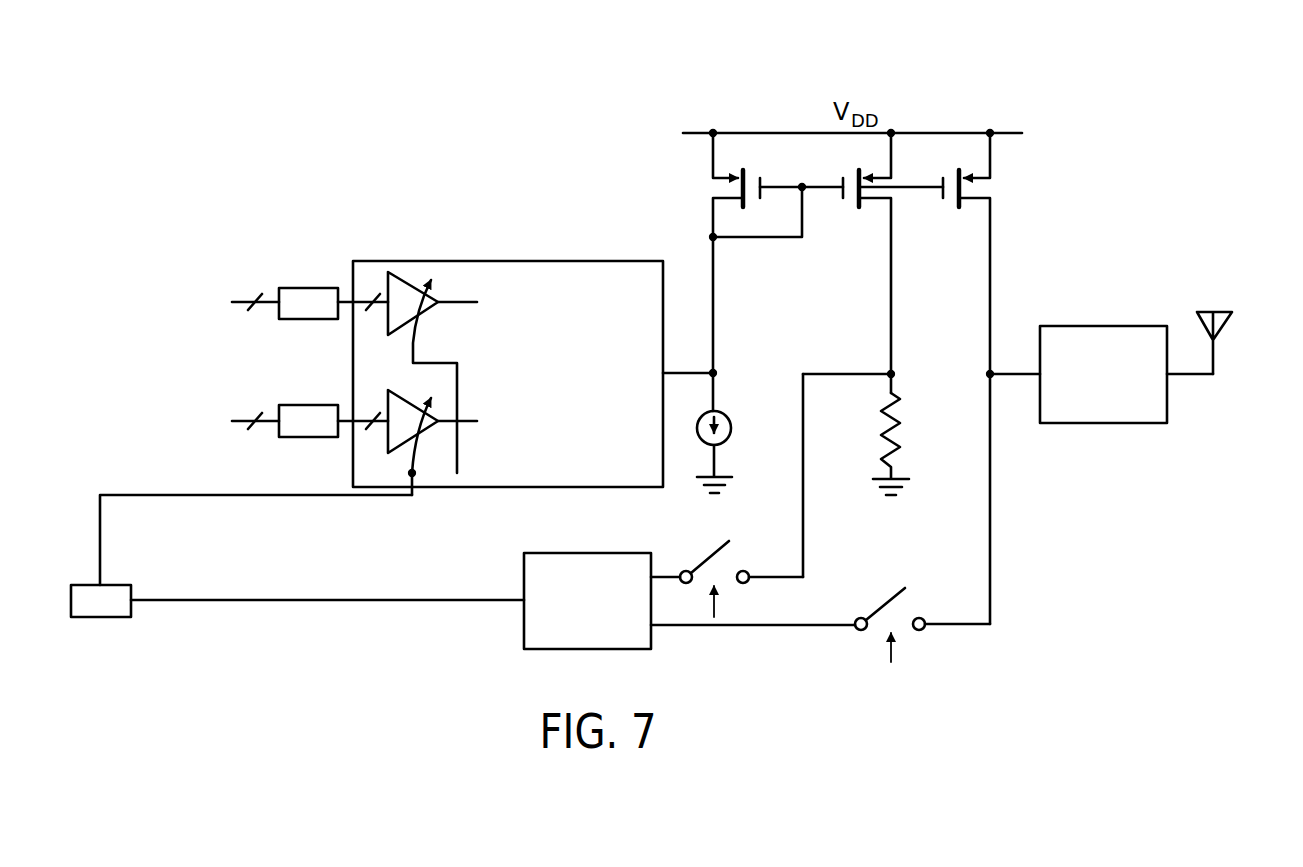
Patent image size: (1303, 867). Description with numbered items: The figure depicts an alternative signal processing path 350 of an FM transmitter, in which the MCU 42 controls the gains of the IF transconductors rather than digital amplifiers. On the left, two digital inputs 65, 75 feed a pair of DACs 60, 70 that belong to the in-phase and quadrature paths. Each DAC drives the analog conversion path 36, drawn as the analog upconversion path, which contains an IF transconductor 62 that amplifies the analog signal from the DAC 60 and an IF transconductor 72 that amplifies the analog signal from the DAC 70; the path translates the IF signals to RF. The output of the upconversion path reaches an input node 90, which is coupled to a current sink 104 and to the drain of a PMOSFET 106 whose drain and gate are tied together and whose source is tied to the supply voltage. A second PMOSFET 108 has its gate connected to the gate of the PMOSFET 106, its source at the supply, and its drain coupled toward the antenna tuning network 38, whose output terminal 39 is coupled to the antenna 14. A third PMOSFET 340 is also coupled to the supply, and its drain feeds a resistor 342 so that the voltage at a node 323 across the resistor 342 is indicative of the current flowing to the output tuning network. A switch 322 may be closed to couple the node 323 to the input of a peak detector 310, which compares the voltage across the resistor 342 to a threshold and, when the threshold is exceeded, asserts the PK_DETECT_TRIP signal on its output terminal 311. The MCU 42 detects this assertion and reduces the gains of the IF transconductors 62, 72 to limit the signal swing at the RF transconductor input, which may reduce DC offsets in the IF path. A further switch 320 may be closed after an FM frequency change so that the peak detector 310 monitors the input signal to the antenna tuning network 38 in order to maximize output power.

The signal processing path 350 is at (1130, 83).
The PMOSFET 106 is at (728, 197).
The PMOSFET 340 is at (870, 202).
The PMOSFET 108 is at (980, 197).
The analog conversion path 36 is at (488, 261).
The digital input signal 65 is at (247, 300).
The DAC 60 is at (310, 288).
The IF transconductor 62 is at (413, 288).
The digital input signal 75 is at (247, 420).
The DAC 70 is at (310, 405).
The IF transconductor 72 is at (387, 445).
The input node 90 is at (680, 373).
The current sink 104 is at (726, 418).
The node 323 is at (893, 373).
The resistor 342 is at (896, 402).
The antenna tuning network 38 is at (1105, 326).
The output terminal 39 is at (1192, 378).
The antenna 14 is at (1222, 328).
The MCU 42 is at (102, 618).
The output terminal 311 is at (327, 602).
The peak detector 310 is at (587, 553).
The switch 322 is at (710, 557).
The switch 320 is at (885, 600).